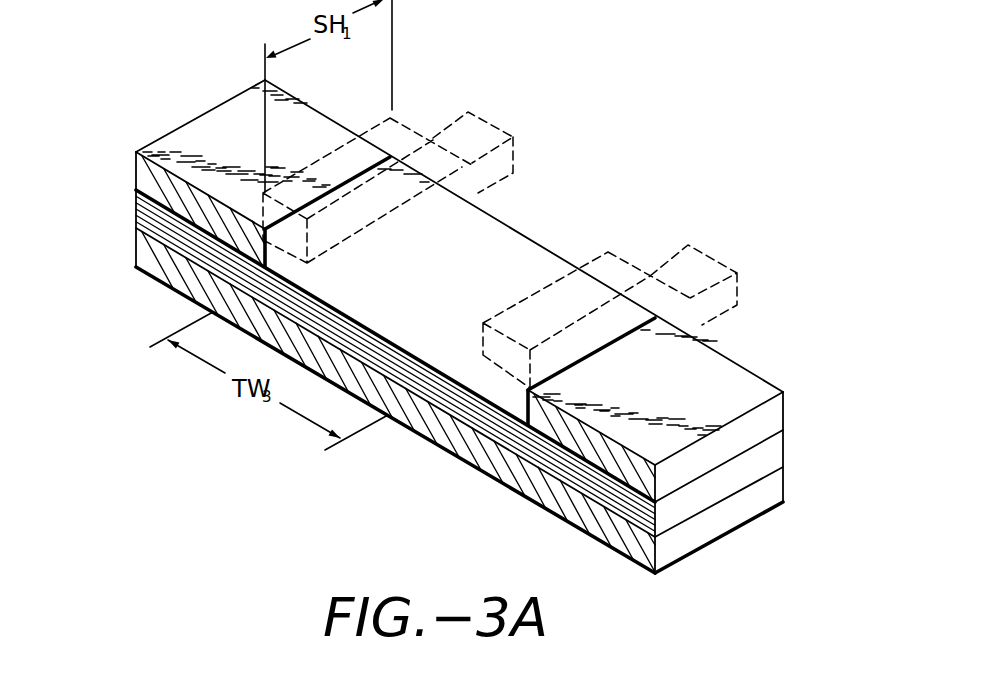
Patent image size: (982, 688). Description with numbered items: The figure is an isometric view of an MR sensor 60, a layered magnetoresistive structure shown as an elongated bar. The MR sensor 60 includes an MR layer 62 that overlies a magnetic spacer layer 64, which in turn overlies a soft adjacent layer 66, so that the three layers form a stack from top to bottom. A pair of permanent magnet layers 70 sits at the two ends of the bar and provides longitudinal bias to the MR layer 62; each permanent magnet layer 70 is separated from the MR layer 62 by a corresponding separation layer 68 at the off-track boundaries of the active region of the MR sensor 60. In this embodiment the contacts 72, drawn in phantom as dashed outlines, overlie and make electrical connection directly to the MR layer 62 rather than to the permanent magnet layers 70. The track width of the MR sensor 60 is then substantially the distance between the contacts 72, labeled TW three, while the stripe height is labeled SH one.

The MR sensor 60 is at (208, 453).
The MR layer 62 is at (470, 238).
The magnetic spacer layer 64 is at (137, 206).
The soft adjacent layer 66 is at (137, 242).
The separation layers 68 is at (186, 291).
The permanent magnet layers 70 is at (210, 120).
The contacts 72 is at (484, 127).